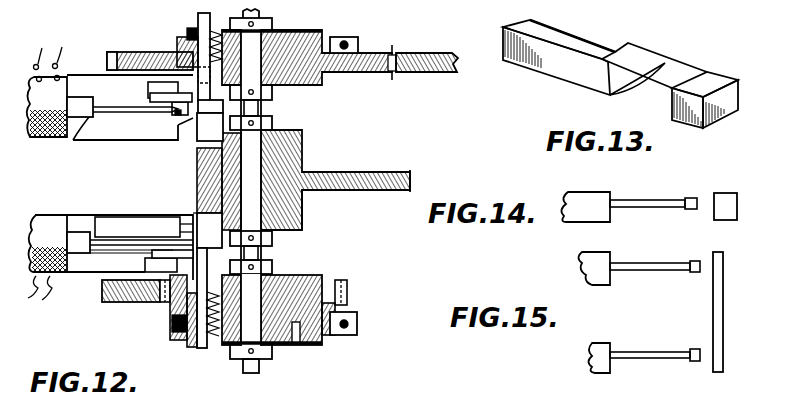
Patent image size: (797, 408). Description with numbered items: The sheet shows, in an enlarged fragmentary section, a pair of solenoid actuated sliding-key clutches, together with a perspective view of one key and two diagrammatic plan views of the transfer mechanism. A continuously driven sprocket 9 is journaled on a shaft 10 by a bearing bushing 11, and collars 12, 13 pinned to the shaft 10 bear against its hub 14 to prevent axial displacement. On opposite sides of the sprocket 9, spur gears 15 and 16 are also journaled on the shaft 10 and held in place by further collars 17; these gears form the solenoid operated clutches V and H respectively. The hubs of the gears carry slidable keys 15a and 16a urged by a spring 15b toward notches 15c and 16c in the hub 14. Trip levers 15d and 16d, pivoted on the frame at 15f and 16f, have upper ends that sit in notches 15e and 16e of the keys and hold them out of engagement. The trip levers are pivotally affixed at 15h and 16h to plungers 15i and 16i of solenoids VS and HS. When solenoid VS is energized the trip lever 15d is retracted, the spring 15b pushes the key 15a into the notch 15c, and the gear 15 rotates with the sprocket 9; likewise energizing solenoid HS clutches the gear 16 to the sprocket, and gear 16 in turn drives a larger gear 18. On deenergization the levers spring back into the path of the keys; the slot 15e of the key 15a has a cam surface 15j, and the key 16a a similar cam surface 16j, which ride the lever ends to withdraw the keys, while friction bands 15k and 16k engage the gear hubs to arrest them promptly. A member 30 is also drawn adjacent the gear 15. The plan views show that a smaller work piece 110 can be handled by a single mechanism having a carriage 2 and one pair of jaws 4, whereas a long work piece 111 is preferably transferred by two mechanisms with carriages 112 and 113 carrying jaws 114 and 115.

In FIG. 14, the carriage 2 is at (612, 193).
In FIG. 14, the jaws 4 is at (690, 198).
In FIG. 12, the sprocket 9 is at (362, 172).
In FIG. 12, the shaft 10 is at (263, 251).
In FIG. 12, the bearing bushing 11 is at (302, 208).
In FIG. 12, the collar 12 is at (273, 126).
In FIG. 12, the collar 13 is at (274, 239).
In FIG. 12, the hub 14 is at (303, 160).
In FIG. 12, the spur gear 15 is at (378, 74).
In FIG. 12, the slidable key 15a is at (150, 141).
In FIG. 13, the slidable key 15a is at (718, 73).
In FIG. 12, the spring 15b is at (198, 17).
In FIG. 12, the notch 15c is at (198, 140).
In FIG. 12, the trip lever 15d is at (177, 126).
In FIG. 12, the notch 15e is at (262, 108).
In FIG. 13, the notch 15e is at (672, 72).
In FIG. 12, the pivot 15f is at (160, 77).
In FIG. 12, the pivot 15h is at (148, 88).
In FIG. 12, the plunger 15i is at (103, 113).
In FIG. 12, the cam surface 15j is at (178, 42).
In FIG. 13, the cam surface 15j is at (630, 90).
In FIG. 12, the friction band 15k is at (334, 37).
In FIG. 12, the spur gear 16 is at (348, 286).
In FIG. 12, the slidable key 16a is at (192, 232).
In FIG. 12, the notch 16c is at (197, 228).
In FIG. 12, the trip lever 16d is at (183, 224).
In FIG. 12, the notch 16e is at (214, 252).
In FIG. 12, the pivot 16f is at (153, 250).
In FIG. 12, the pivot 16h is at (175, 257).
In FIG. 12, the plunger 16i is at (98, 216).
In FIG. 12, the cam surface 16j is at (164, 322).
In FIG. 12, the friction band 16k is at (343, 336).
In FIG. 12, the collars 17 is at (274, 26).
In FIG. 12, the larger gear 18 is at (102, 290).
In FIG. 12, the arm extension 30 is at (420, 74).
In FIG. 14, the work piece 110 is at (737, 206).
In FIG. 15, the work piece 111 is at (724, 313).
In FIG. 15, the carriage 112 is at (600, 276).
In FIG. 15, the carriage 113 is at (598, 345).
In FIG. 15, the jaws 114 is at (693, 274).
In FIG. 15, the jaws 115 is at (693, 349).
In FIG. 12, the solenoid operated clutch V is at (132, 22).
In FIG. 12, the solenoid VS is at (40, 137).
In FIG. 12, the solenoid HS is at (45, 215).
In FIG. 12, the solenoid operated clutch H is at (196, 350).